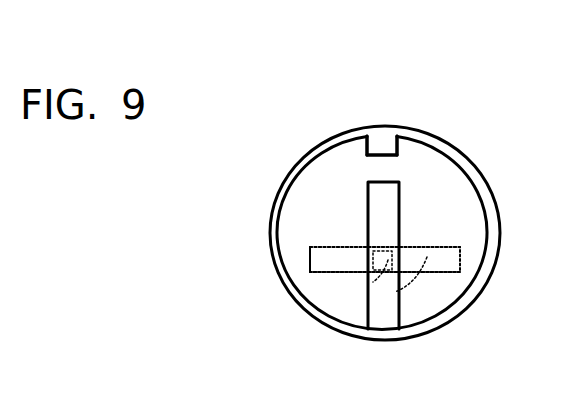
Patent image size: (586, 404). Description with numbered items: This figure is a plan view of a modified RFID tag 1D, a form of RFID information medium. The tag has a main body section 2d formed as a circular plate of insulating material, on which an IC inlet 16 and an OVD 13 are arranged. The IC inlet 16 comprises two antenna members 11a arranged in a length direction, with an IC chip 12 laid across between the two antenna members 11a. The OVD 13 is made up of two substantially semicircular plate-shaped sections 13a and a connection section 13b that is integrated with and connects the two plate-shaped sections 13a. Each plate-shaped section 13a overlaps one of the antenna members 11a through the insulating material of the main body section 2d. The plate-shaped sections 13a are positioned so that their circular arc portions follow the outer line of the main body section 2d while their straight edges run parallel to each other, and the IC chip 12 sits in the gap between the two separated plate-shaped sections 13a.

The RFID tag 1D is at (478, 146).
The OVD 13 is at (463, 78).
The plate-shaped sections 13a is at (345, 153).
The connection section 13b is at (381, 163).
The main body section 2d is at (428, 328).
The IC inlet 16 is at (151, 210).
The antenna members 11a is at (347, 264).
The IC chip 12 is at (367, 287).